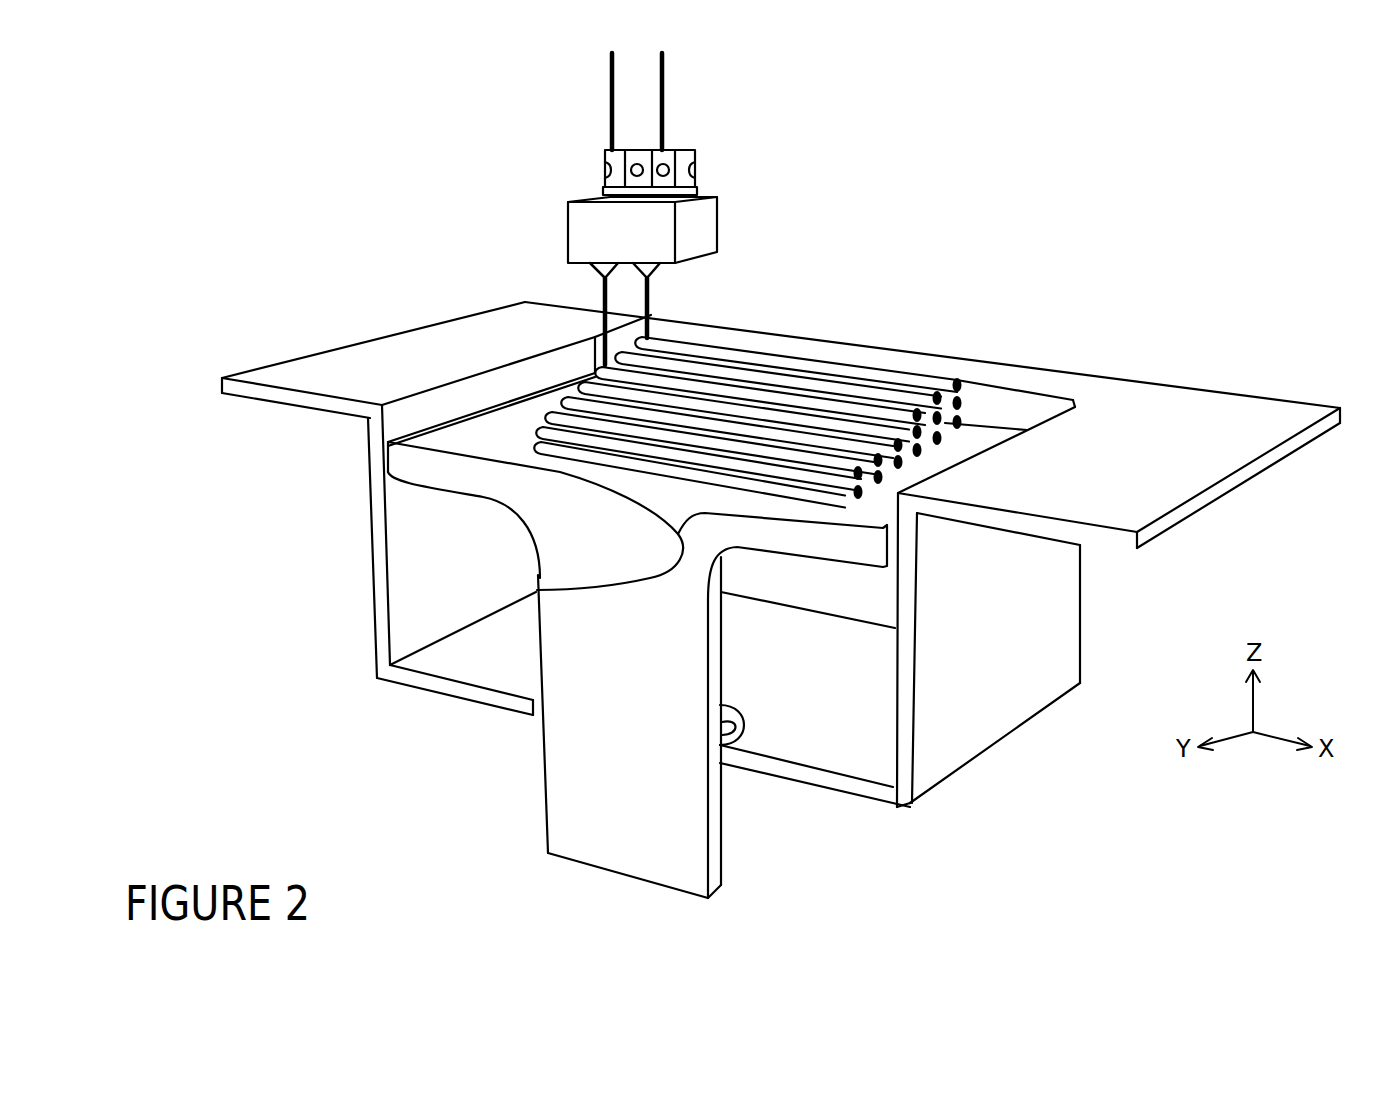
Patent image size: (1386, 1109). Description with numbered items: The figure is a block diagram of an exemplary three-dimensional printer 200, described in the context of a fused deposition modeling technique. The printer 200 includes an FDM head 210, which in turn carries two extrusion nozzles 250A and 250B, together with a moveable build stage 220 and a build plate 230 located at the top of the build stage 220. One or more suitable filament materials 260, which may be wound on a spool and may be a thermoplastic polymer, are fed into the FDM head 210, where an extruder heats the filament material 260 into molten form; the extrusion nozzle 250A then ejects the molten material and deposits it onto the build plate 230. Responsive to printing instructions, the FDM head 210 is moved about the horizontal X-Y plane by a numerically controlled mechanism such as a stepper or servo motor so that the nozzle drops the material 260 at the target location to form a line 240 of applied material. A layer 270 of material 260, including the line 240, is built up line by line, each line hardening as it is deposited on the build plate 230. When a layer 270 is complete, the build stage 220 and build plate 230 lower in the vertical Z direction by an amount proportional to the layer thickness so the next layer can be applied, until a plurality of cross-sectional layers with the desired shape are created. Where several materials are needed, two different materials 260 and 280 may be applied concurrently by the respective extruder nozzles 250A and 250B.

The 3-D printer 200 is at (308, 138).
The FDM head 210 is at (697, 197).
The moveable build stage 220 is at (645, 733).
The build plate 230 is at (972, 438).
The line of applied material 240 is at (858, 364).
The extrusion nozzle 250A is at (590, 266).
The extrusion nozzle 250B is at (650, 285).
The filament material 260 is at (612, 124).
The layer of material 270 is at (640, 578).
The second material 280 is at (663, 124).